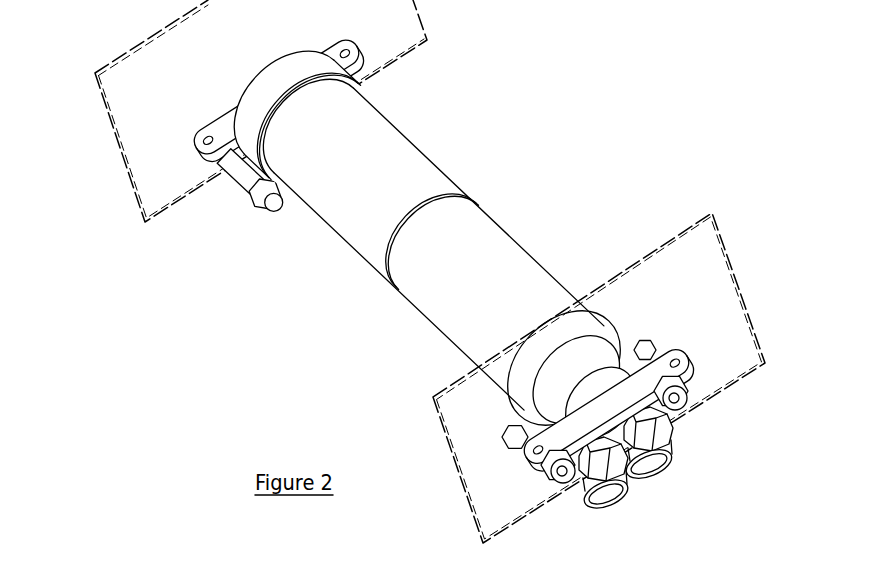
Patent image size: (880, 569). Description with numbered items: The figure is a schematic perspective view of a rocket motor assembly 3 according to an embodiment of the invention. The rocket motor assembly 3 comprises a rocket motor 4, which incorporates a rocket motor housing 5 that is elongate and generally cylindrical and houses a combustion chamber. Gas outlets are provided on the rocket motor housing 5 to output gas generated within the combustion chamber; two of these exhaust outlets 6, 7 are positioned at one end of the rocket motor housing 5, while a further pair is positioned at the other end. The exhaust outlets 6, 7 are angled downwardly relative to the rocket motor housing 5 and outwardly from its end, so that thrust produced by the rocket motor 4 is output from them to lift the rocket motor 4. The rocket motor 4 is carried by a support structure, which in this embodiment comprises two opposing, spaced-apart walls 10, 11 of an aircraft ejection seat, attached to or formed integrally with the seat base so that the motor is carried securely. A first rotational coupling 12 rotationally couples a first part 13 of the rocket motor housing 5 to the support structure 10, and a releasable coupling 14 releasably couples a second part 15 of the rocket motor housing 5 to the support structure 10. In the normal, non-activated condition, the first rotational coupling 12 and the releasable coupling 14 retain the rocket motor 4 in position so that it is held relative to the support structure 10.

The rocket motor assembly 3 is at (495, 293).
The rocket motor 4 is at (428, 152).
The rocket motor housing 5 is at (448, 297).
The gas outlet 6 is at (606, 508).
The gas outlet 7 is at (665, 468).
The wall 10 is at (738, 268).
The wall 11 is at (118, 107).
The first rotational coupling 12 is at (680, 405).
The first part 13 is at (690, 392).
The releasable coupling 14 is at (564, 490).
The second part 15 is at (560, 487).